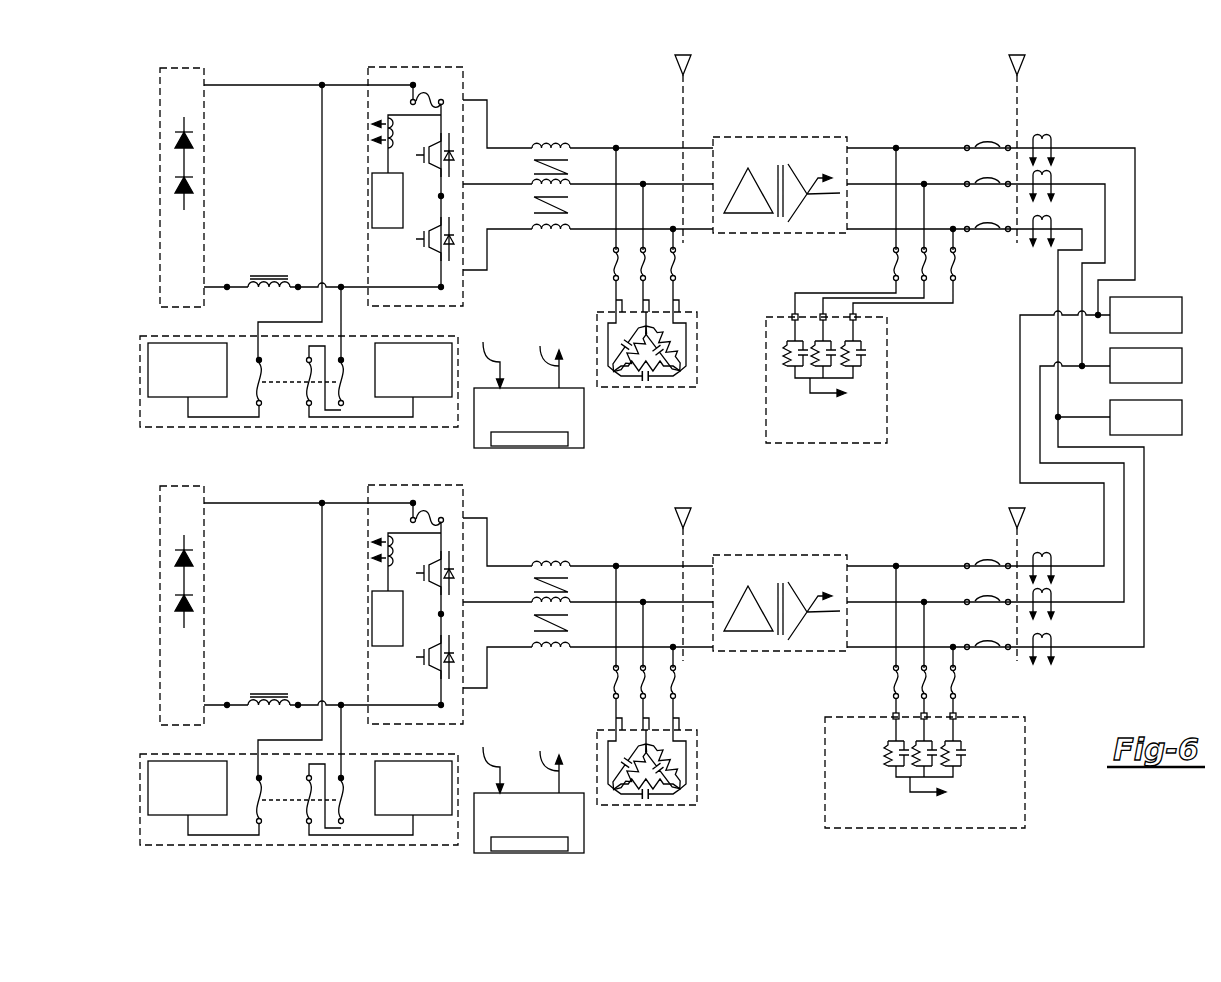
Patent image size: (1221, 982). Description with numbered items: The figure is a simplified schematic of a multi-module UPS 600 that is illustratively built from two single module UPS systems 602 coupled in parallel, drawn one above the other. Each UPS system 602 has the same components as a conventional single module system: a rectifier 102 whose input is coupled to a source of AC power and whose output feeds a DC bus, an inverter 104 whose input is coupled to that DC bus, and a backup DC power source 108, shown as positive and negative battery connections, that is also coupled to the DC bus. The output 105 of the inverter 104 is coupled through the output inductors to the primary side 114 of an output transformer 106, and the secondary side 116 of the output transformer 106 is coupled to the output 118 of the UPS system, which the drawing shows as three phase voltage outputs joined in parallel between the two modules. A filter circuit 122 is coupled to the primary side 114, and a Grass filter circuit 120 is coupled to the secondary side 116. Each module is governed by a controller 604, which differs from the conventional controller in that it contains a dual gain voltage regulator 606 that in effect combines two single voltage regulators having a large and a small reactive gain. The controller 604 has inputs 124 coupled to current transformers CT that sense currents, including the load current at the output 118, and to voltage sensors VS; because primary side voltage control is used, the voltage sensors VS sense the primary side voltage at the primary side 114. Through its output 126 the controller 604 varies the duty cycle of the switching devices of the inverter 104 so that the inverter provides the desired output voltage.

The multi-module UPS 600 is at (100, 148).
The single module UPS system 602 is at (126, 443).
The rectifier 102 is at (206, 71).
The inverter 104 is at (368, 80).
The output 105 is at (474, 81).
The output transformer 106 is at (846, 135).
The backup DC power source 108 is at (140, 400).
The primary side 114 is at (703, 110).
The secondary side 116 is at (888, 108).
The output 118 is at (1176, 287).
The Grass filter circuit 120 is at (887, 408).
The filter circuit 122 is at (697, 368).
The inputs 124 is at (488, 557).
The output 126 is at (545, 558).
The controller 604 is at (584, 437).
The dual gain voltage regulator 606 is at (508, 440).